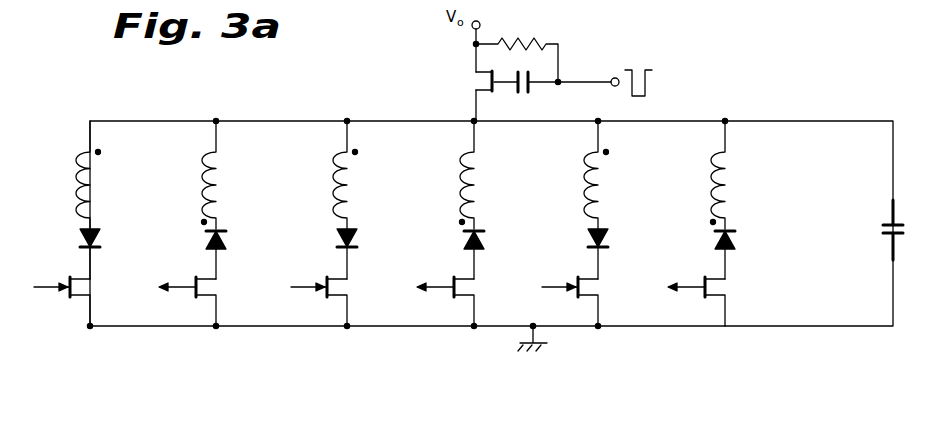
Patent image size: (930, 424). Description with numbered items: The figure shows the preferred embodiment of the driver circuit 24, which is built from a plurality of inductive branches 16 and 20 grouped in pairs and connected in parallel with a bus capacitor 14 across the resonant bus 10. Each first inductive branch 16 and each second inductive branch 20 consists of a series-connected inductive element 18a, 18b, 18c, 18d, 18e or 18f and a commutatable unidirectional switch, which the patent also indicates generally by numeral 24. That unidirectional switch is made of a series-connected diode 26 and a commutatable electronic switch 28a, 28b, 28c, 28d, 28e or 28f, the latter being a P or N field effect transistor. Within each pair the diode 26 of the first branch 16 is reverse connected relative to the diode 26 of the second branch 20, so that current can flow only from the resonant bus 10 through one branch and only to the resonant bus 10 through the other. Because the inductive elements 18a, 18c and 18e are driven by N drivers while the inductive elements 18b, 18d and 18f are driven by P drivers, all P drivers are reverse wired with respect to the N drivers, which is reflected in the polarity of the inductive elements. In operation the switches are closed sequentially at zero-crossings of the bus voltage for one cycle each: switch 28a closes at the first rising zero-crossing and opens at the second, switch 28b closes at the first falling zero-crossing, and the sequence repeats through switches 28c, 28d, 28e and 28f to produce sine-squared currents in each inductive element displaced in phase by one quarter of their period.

The resonant bus 10 is at (854, 100).
The bus capacitor 14 is at (898, 222).
The first inductive branch 16 is at (108, 155).
The second inductive branch 20 is at (193, 152).
The inductive element 18a is at (77, 190).
The inductive element 18b is at (203, 190).
The inductive element 18c is at (334, 190).
The inductive element 18d is at (461, 190).
The inductive element 18e is at (585, 190).
The inductive element 18f is at (712, 190).
The diode 26 is at (100, 247).
The electronic switch 28a is at (73, 293).
The electronic switch 28b is at (199, 293).
The electronic switch 28c is at (330, 293).
The electronic switch 28d is at (457, 293).
The electronic switch 28e is at (581, 293).
The electronic switch 28f is at (708, 293).
The driver circuit 24 is at (94, 332).